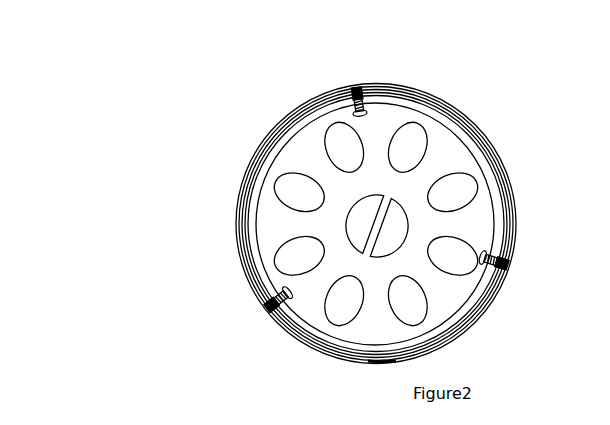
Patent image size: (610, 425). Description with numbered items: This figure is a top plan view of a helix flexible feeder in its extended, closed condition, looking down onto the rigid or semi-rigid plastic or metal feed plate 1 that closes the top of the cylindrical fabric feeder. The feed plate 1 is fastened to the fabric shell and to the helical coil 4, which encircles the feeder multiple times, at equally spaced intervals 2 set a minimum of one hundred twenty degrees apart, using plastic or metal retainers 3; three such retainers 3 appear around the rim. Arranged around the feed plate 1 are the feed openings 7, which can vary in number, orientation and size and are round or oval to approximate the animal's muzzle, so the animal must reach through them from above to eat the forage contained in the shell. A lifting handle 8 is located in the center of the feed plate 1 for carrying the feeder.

The feed plate 1 is at (405, 238).
The equally spaced intervals 2 is at (393, 213).
The retainers 3 is at (392, 214).
The helical coil 4 is at (376, 254).
The feed openings 7 is at (405, 212).
The lifting handle 8 is at (303, 180).